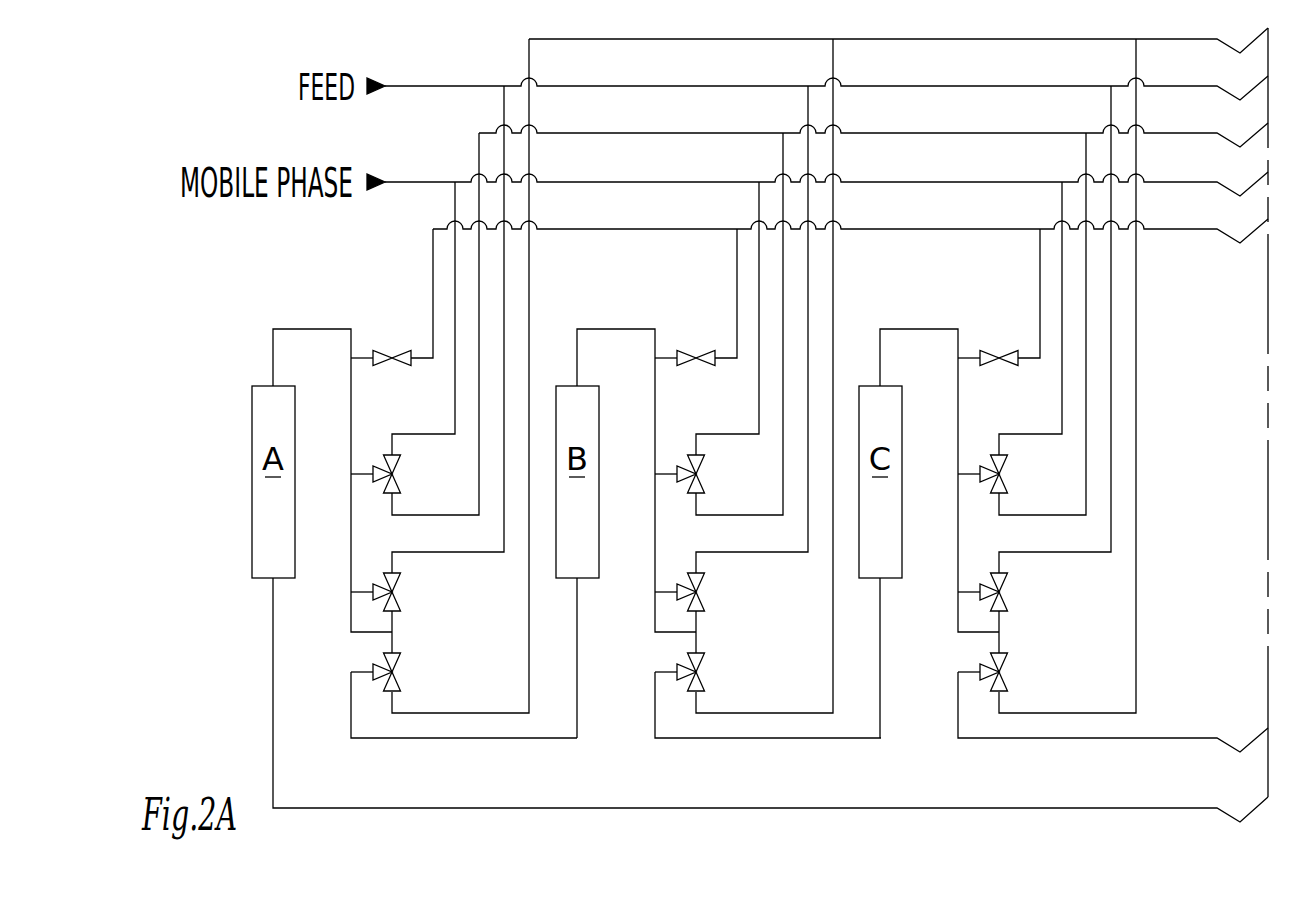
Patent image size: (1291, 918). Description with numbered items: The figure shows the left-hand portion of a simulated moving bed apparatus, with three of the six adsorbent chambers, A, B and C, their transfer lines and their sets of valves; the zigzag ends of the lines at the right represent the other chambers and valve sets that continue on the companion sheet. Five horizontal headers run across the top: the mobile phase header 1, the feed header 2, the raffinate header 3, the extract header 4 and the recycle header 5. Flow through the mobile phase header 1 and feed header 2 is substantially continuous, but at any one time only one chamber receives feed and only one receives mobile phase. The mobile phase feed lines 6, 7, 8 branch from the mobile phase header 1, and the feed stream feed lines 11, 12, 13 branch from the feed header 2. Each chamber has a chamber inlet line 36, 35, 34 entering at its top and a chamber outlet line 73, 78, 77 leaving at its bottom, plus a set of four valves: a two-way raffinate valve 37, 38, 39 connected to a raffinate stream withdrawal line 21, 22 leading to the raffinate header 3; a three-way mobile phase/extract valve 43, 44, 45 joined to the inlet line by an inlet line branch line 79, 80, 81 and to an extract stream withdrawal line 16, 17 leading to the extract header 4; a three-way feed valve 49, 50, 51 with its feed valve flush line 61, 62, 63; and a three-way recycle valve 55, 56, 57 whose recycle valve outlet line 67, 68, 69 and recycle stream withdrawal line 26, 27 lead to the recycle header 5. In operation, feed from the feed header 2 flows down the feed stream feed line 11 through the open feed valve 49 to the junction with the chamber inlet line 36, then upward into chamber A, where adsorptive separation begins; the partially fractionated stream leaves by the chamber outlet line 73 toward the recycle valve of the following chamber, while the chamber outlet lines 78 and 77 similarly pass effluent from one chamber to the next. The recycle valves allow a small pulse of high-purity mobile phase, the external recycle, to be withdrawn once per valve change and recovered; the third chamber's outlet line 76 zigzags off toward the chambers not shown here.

The mobile phase header 1 is at (424, 182).
The feed header 2 is at (424, 86).
The raffinate header 3 is at (586, 229).
The extract header 4 is at (586, 133).
The recycle header 5 is at (589, 39).
The mobile phase feed line 6 is at (455, 410).
The mobile phase feed line 7 is at (727, 318).
The mobile phase feed line 8 is at (1030, 318).
The feed stream feed line 11 is at (504, 537).
The feed stream feed line 12 is at (752, 329).
The feed stream feed line 13 is at (1055, 329).
The extract stream withdrawal line 16 is at (739, 324).
The extract stream withdrawal line 17 is at (1042, 324).
The raffinate stream withdrawal line 21 is at (700, 317).
The raffinate stream withdrawal line 22 is at (1011, 293).
The recycle stream withdrawal line 26 is at (764, 376).
The recycle stream withdrawal line 27 is at (1067, 376).
The chamber inlet line 34 is at (939, 477).
The chamber inlet line 35 is at (636, 477).
The chamber inlet line 36 is at (309, 329).
The raffinate valve 37 is at (388, 352).
The raffinate valve 38 is at (685, 343).
The raffinate valve 39 is at (988, 343).
The mobile phase/extract valve 43 is at (380, 474).
The mobile phase/extract valve 44 is at (660, 473).
The mobile phase/extract valve 45 is at (963, 473).
The feed valve 49 is at (400, 584).
The feed valve 50 is at (710, 588).
The feed valve 51 is at (1013, 588).
The recycle valve 55 is at (378, 674).
The recycle valve 56 is at (660, 699).
The recycle valve 57 is at (963, 699).
The feed valve flush line 61 is at (395, 617).
The feed valve flush line 62 is at (734, 613).
The feed valve flush line 63 is at (1037, 613).
The recycle valve outlet line 67 is at (395, 645).
The recycle valve outlet line 68 is at (732, 645).
The recycle valve outlet line 69 is at (1035, 645).
The chamber outlet line 73 is at (790, 808).
The chamber outlet line 76 is at (1113, 723).
The chamber outlet line 77 is at (768, 723).
The chamber outlet line 78 is at (443, 738).
The inlet line branch line 79 is at (364, 476).
The inlet line branch line 80 is at (646, 493).
The inlet line branch line 81 is at (949, 493).